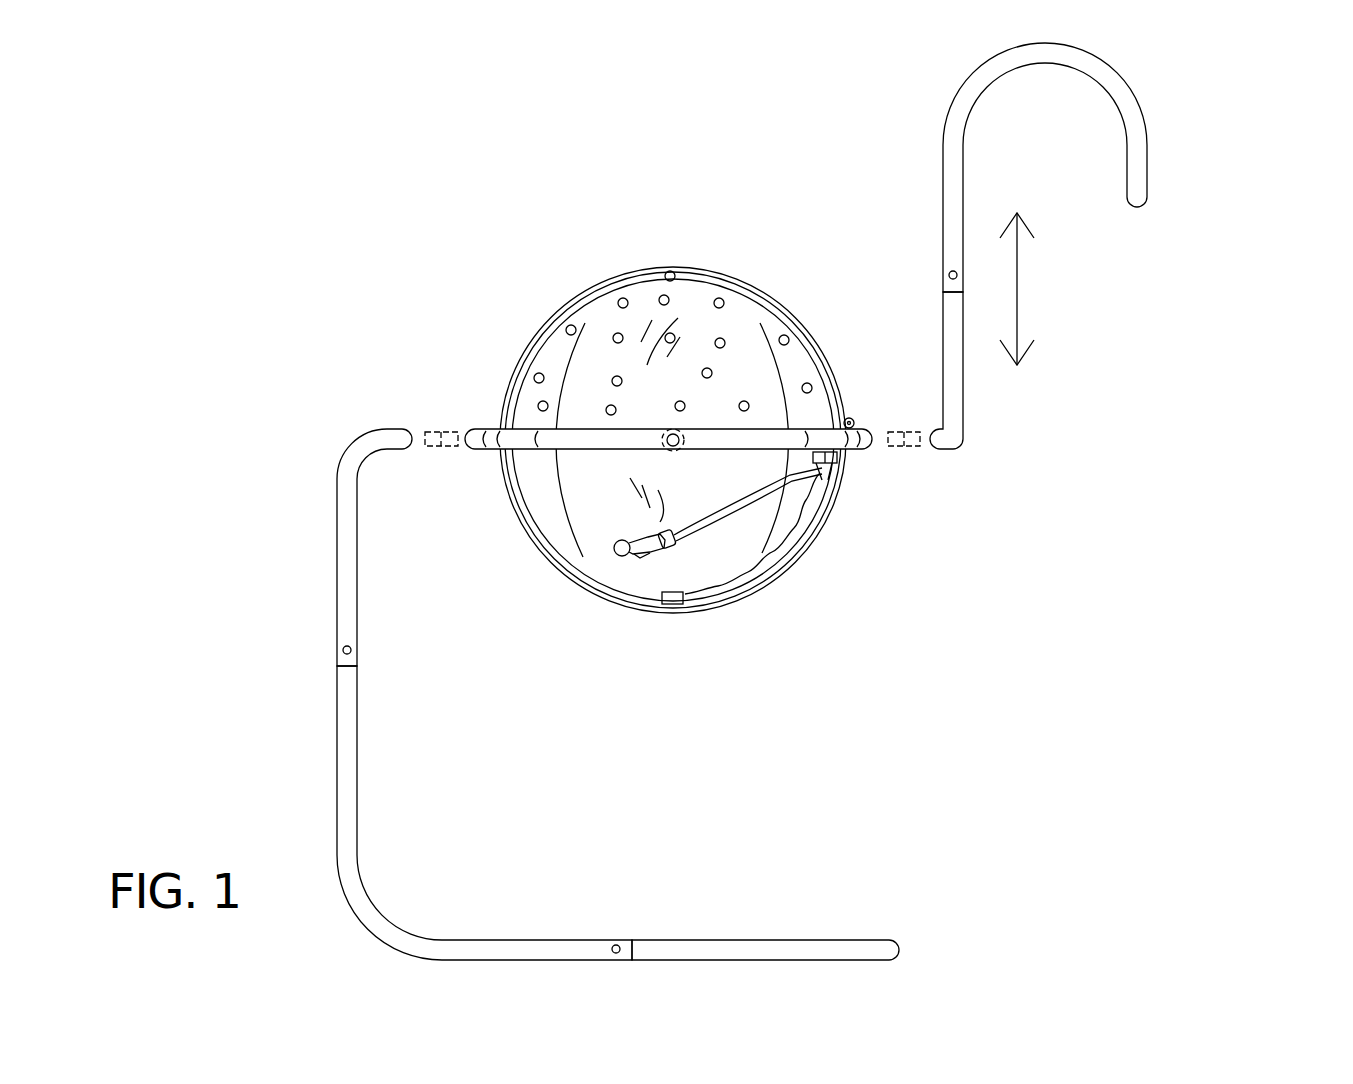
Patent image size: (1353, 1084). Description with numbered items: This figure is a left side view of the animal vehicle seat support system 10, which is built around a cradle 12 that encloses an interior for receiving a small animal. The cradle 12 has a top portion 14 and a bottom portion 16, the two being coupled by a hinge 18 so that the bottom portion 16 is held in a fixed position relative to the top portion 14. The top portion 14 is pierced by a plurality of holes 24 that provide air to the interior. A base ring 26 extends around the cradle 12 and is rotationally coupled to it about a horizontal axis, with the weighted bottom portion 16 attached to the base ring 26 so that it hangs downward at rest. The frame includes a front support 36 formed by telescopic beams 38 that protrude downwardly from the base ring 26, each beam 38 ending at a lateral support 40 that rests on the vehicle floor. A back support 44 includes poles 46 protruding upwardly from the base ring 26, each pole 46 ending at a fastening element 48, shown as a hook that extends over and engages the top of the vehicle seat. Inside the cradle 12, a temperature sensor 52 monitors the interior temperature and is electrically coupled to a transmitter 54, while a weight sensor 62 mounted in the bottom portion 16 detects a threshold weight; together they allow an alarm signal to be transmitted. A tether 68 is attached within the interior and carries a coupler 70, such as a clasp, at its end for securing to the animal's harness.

The animal vehicle seat support system 10 is at (1190, 93).
The cradle 12 is at (609, 250).
The top portion 14 is at (745, 312).
The bottom portion 16 is at (780, 538).
The hinge 18 is at (851, 418).
The holes 24 is at (570, 330).
The base ring 26 is at (577, 443).
The front support 36 is at (566, 595).
The beams 38 is at (338, 575).
The lateral support 40 is at (707, 947).
The back support 44 is at (1066, 360).
The poles 46 is at (943, 187).
The fastening element 48 is at (1148, 152).
The temperature sensor 52 is at (836, 468).
The transmitter 54 is at (840, 456).
The weight sensor 62 is at (667, 608).
The tether 68 is at (702, 512).
The coupler 70 is at (660, 532).